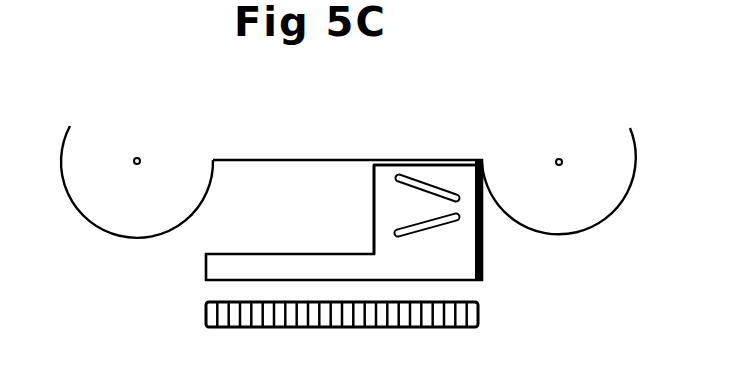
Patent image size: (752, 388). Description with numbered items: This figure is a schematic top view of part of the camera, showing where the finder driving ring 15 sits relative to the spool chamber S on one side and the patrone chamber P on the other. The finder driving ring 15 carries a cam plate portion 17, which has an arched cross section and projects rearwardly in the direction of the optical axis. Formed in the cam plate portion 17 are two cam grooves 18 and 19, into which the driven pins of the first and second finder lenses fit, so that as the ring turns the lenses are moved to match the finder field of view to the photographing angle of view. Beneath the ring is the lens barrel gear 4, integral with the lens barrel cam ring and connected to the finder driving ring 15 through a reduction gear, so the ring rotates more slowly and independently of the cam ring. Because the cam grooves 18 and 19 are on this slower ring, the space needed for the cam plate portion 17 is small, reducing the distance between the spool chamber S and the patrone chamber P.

The lens barrel gear 4 is at (480, 314).
The finder driving ring 15 is at (281, 262).
The cam plate portion 17 is at (457, 182).
The cam groove 18 is at (400, 225).
The cam groove 19 is at (400, 172).
The patrone chamber P is at (116, 200).
The spool chamber S is at (608, 197).